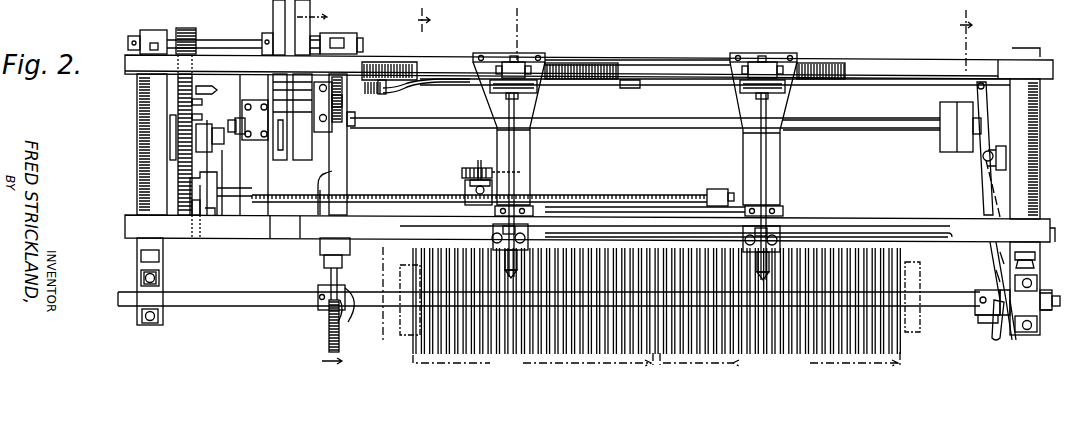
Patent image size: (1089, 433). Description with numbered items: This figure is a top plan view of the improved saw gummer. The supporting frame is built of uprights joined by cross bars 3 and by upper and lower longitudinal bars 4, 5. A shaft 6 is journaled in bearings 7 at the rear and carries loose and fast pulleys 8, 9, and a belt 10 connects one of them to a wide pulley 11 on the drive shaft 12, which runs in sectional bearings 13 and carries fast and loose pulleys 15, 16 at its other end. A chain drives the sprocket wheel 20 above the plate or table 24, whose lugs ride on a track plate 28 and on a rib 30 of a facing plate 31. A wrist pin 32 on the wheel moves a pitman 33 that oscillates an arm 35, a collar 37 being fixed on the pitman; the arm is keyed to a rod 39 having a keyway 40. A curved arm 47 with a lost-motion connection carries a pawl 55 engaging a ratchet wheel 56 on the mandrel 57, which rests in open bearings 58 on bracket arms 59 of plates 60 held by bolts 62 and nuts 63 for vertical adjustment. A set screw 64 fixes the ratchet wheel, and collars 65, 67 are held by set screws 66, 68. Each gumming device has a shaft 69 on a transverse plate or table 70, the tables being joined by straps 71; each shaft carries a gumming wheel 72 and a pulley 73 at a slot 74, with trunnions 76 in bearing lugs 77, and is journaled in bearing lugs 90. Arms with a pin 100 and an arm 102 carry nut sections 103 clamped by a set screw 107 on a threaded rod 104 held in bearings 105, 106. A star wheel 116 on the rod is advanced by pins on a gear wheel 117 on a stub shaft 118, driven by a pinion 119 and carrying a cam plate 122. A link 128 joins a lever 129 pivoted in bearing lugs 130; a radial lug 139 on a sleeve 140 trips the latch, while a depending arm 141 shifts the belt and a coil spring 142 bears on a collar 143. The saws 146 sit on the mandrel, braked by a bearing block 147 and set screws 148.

The cross bars 3 is at (1025, 196).
The upper longitudinally extending bars 4 is at (126, 62).
The lower longitudinally extending bars 5 is at (422, 16).
The shaft 6 is at (230, 47).
The bearings 7 is at (160, 32).
The loose pulley 8 is at (272, 6).
The fast pulley 9 is at (382, 307).
The belt 10 is at (963, 36).
The wide pulley 11 is at (315, 165).
The drive shaft 12 is at (886, 122).
The sectional bearings 13 is at (319, 182).
The fast pulley 15 is at (940, 146).
The loose pulley 16 is at (960, 152).
The sprocket wheel 20 is at (342, 74).
The plate or table 24 is at (352, 165).
The facing plate or track plate 28 is at (883, 70).
The rib 30 is at (300, 227).
The facing plate 31 is at (278, 225).
The wrist pin 32 is at (354, 125).
The pitman 33 is at (330, 170).
The arm 35 is at (345, 248).
The collar 37 is at (340, 265).
The rod 39 is at (845, 222).
The keyway 40 is at (915, 222).
The curved arm 47 is at (342, 308).
The pawl 55 is at (337, 322).
The ratchet wheel 56 is at (328, 323).
The mandrel 57 is at (228, 302).
The open bearings 58 is at (138, 314).
The bracket arms 59 is at (141, 270).
The plates 60 is at (1052, 240).
The bolts or threaded stems 62 is at (1040, 270).
The nuts 63 is at (1040, 256).
The set screw 64 is at (318, 296).
The collar 65 is at (1056, 305).
The set screw 66 is at (1052, 293).
The collar 67 is at (975, 313).
The set screw 68 is at (980, 298).
The shaft 69 is at (540, 108).
The plate or table 70 is at (530, 152).
The straps 71 is at (633, 55).
The gumming wheel 72 is at (513, 277).
The pulley 73 is at (785, 91).
The transverse slot 74 is at (538, 88).
The trunnions or journal pins 76 is at (540, 70).
The bearing lugs 77 is at (503, 68).
The bearing lugs 90 is at (493, 224).
The pin 100 is at (467, 168).
The arm 102 is at (465, 180).
The nut sections 103 is at (465, 198).
The threaded rod 104 is at (377, 195).
The bearing 105 is at (720, 190).
The bearing 106 is at (207, 192).
The set screw 107 is at (484, 164).
The star wheel 116 is at (199, 238).
The gear wheel 117 is at (176, 91).
The stub shaft 118 is at (236, 137).
The pinion 119 is at (186, 30).
The plate 122 is at (180, 176).
The link 128 is at (245, 85).
The lever 129 is at (983, 103).
The bearing lugs 130 is at (998, 158).
The radial lug 139 is at (996, 322).
The sleeve 140 is at (1014, 325).
The depending arm 141 is at (305, 135).
The coil spring 142 is at (368, 90).
The collar 143 is at (392, 86).
The saws 146 is at (796, 372).
The movable bearing block 147 is at (115, 296).
The set screws 148 is at (206, 281).